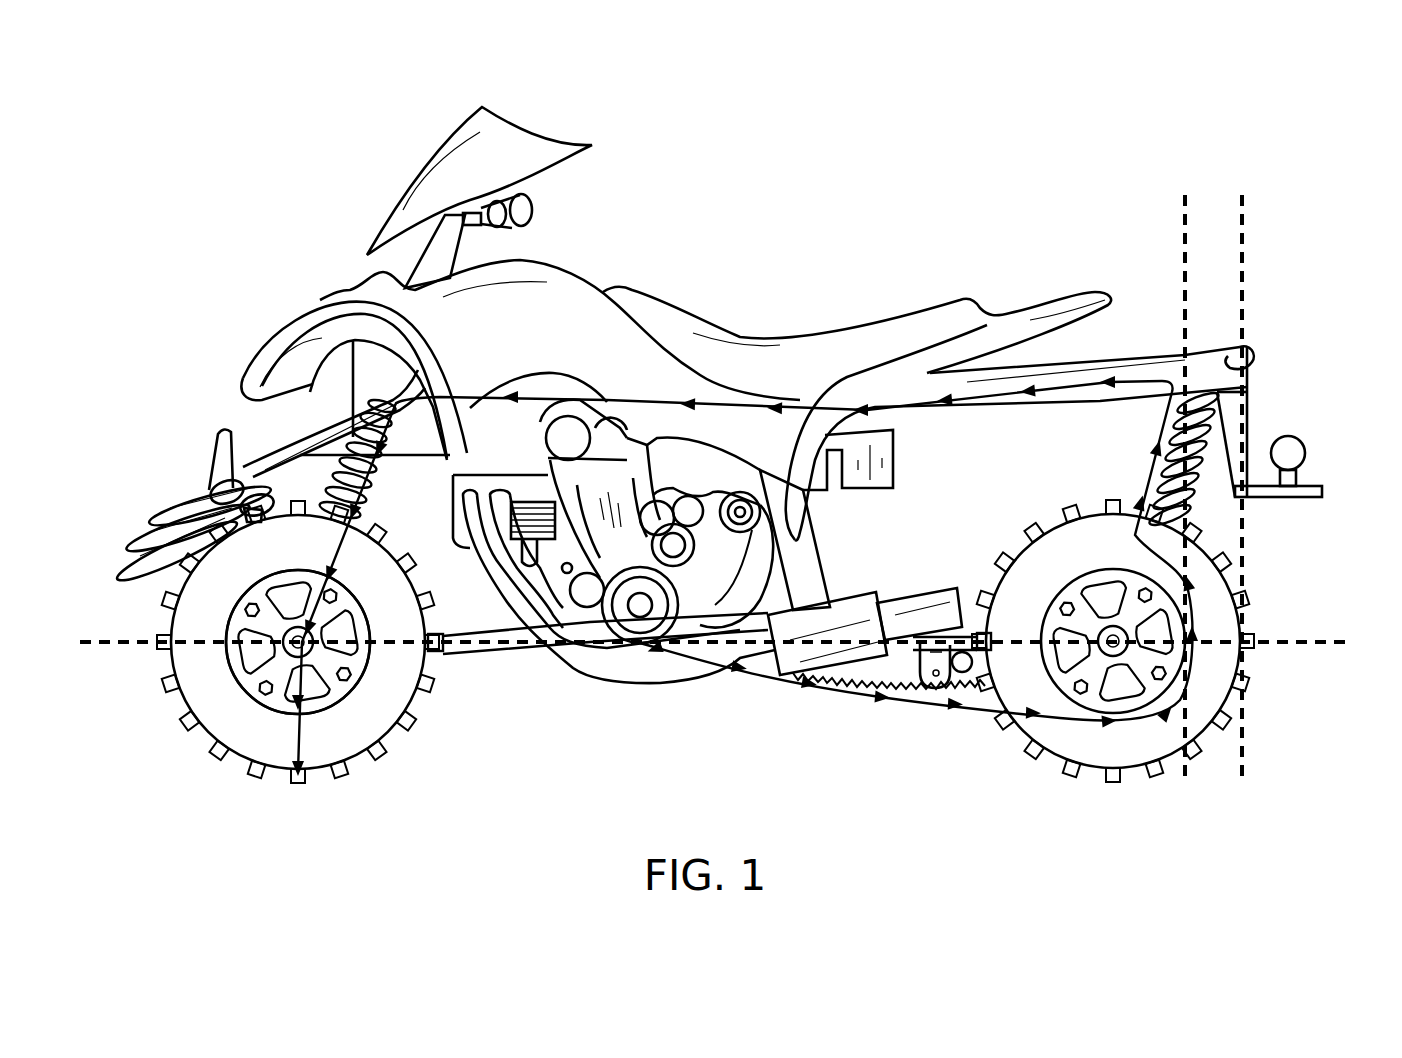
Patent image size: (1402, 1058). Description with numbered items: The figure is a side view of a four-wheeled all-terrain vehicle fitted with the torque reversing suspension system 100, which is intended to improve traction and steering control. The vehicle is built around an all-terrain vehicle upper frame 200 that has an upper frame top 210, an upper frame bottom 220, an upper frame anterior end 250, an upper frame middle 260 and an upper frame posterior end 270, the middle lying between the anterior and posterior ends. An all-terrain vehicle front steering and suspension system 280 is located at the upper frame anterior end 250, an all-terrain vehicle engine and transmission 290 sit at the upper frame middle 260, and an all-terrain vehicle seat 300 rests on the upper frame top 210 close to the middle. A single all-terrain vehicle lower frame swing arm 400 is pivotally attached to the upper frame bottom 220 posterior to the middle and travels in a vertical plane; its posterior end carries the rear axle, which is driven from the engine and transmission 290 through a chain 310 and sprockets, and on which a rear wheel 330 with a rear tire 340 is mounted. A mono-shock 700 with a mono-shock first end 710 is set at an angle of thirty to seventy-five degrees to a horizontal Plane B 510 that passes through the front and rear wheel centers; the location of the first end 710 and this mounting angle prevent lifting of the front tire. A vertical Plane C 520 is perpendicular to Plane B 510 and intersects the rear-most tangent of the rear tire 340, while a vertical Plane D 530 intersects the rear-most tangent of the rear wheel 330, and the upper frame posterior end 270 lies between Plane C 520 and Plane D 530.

The torque reversing suspension system 100 is at (364, 126).
The all-terrain vehicle upper frame 200 is at (916, 382).
The upper frame top 210 is at (1050, 363).
The upper frame bottom 220 is at (752, 615).
The upper frame anterior end 250 is at (255, 460).
The upper frame middle 260 is at (733, 607).
The upper frame posterior end 270 is at (1230, 357).
The all-terrain vehicle front steering and suspension system 280 is at (329, 355).
The all-terrain vehicle engine and transmission 290 is at (642, 457).
The all-terrain vehicle seat 300 is at (762, 360).
The chain 310 is at (848, 682).
The rear wheel 330 is at (247, 680).
The rear tire 340 is at (363, 722).
The single all-terrain vehicle lower frame swing arm 400 is at (951, 660).
The Plane B 510 is at (100, 650).
The Plane C 520 is at (1245, 742).
The Plane D 530 is at (1187, 780).
The mono-shock 700 is at (1181, 485).
The mono-shock first end 710 is at (1205, 392).